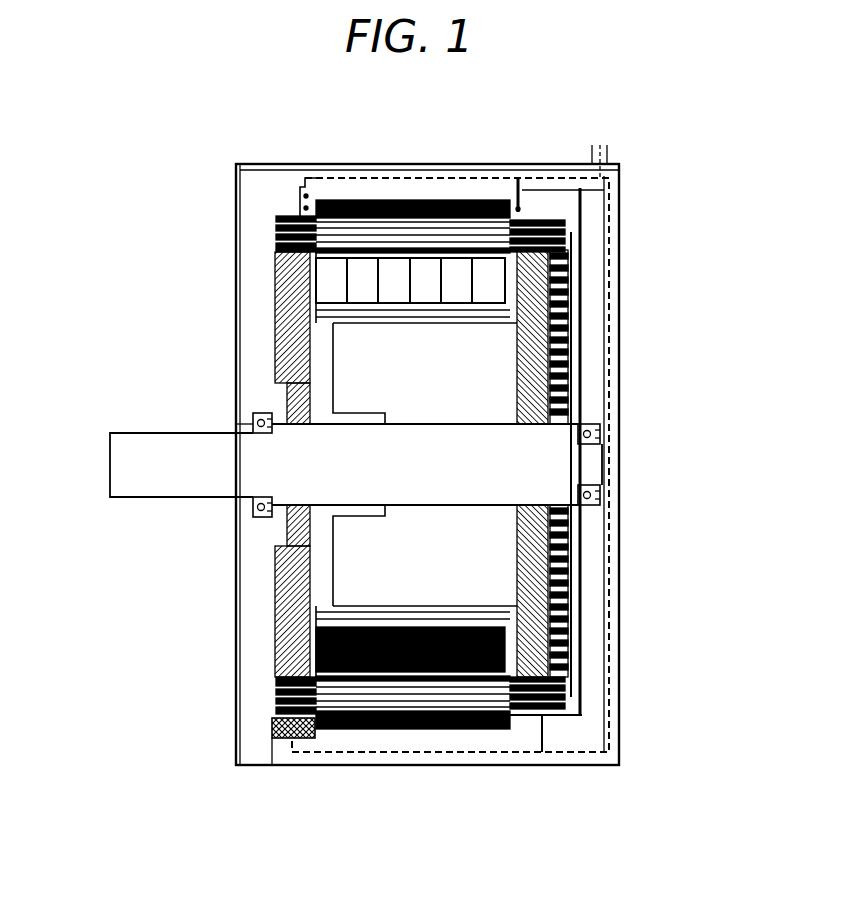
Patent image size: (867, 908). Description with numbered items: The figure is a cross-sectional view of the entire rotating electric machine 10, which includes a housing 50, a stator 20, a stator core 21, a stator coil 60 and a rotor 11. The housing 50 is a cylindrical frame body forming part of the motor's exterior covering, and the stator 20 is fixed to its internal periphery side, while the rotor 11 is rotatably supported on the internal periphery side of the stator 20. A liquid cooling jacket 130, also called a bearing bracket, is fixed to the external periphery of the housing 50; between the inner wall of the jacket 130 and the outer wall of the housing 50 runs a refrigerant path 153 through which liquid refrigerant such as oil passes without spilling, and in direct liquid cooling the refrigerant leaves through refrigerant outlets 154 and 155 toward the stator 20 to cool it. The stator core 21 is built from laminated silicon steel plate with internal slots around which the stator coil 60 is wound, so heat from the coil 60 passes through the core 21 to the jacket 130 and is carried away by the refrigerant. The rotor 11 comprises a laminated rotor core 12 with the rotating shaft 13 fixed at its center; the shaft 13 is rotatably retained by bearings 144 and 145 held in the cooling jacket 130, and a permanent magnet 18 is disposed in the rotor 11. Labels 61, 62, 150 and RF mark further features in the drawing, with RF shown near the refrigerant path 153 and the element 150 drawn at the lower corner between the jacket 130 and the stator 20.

The rotating electric machine 10 is at (96, 351).
The rotor 11 is at (325, 388).
The rotor core 12 is at (273, 615).
The rotating shaft 13 is at (133, 452).
The permanent magnet 18 is at (333, 278).
The stator 20 is at (273, 672).
The stator core 21 is at (412, 200).
The housing 50 is at (487, 190).
The stator coil 60 is at (338, 203).
The rotor core end 61 is at (277, 303).
The stator core 62 is at (560, 280).
The liquid cooling jacket 130 is at (619, 765).
The bearing 144 is at (270, 508).
The bearing 145 is at (597, 497).
The seal member 150 is at (273, 720).
The refrigerant path 153 is at (325, 175).
The refrigerant outlet 154 is at (310, 174).
The refrigerant outlet 155 is at (522, 190).
The reference face RF is at (312, 204).